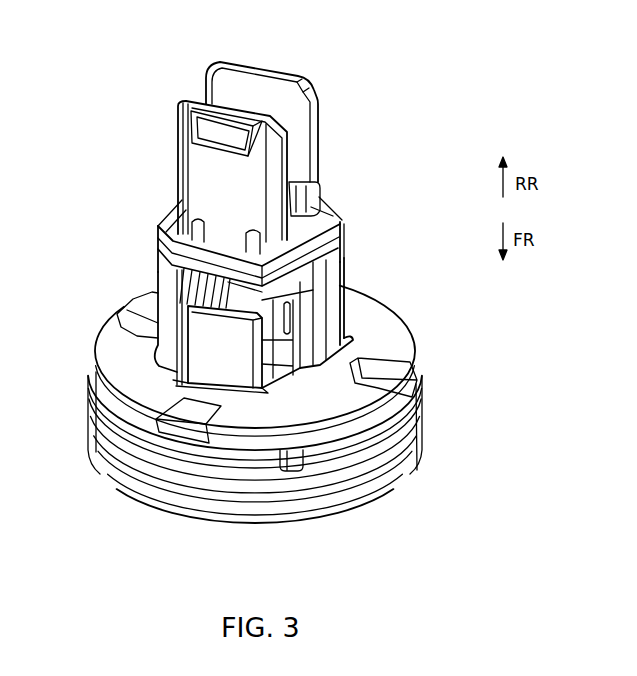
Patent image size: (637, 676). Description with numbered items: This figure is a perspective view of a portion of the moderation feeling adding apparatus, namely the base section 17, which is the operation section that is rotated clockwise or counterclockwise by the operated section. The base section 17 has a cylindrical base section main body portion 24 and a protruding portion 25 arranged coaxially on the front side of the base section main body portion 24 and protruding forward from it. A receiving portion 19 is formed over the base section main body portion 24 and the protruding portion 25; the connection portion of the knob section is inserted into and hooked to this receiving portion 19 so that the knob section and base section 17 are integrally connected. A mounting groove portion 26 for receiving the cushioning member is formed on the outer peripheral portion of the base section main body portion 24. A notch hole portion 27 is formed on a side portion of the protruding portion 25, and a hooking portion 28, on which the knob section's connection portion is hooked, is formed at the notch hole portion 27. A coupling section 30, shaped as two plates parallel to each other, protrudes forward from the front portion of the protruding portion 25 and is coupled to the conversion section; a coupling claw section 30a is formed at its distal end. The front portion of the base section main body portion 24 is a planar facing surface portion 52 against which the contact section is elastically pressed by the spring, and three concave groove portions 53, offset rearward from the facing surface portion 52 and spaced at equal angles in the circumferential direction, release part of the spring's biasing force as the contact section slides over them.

The base section 17 is at (333, 74).
The receiving portion 19 is at (156, 258).
The base section main body portion 24 is at (397, 312).
The protruding portion 25 is at (335, 213).
The mounting groove portion 26 is at (387, 440).
The notch hole portion 27 is at (302, 278).
The hooking portion 28 is at (192, 328).
The coupling section 30 is at (281, 73).
The coupling claw section 30a is at (189, 130).
The facing surface portion 52 is at (108, 372).
The concave groove portion 53 is at (122, 313).